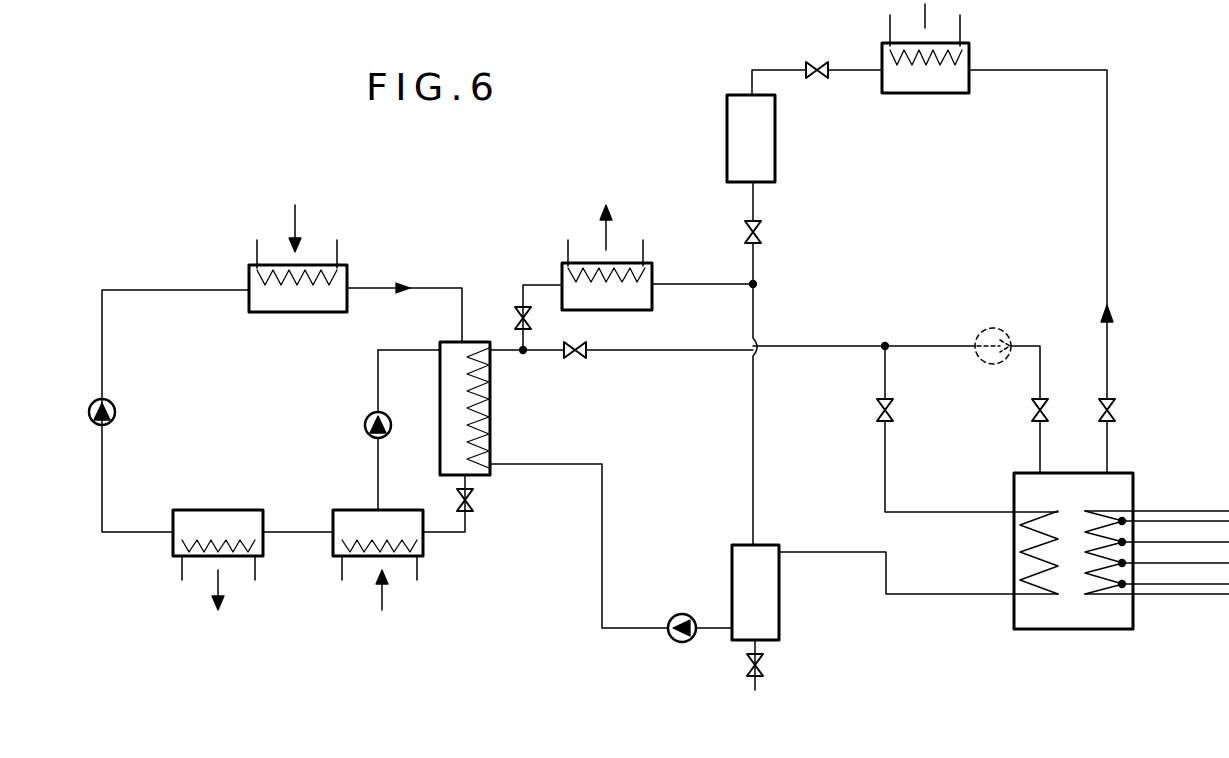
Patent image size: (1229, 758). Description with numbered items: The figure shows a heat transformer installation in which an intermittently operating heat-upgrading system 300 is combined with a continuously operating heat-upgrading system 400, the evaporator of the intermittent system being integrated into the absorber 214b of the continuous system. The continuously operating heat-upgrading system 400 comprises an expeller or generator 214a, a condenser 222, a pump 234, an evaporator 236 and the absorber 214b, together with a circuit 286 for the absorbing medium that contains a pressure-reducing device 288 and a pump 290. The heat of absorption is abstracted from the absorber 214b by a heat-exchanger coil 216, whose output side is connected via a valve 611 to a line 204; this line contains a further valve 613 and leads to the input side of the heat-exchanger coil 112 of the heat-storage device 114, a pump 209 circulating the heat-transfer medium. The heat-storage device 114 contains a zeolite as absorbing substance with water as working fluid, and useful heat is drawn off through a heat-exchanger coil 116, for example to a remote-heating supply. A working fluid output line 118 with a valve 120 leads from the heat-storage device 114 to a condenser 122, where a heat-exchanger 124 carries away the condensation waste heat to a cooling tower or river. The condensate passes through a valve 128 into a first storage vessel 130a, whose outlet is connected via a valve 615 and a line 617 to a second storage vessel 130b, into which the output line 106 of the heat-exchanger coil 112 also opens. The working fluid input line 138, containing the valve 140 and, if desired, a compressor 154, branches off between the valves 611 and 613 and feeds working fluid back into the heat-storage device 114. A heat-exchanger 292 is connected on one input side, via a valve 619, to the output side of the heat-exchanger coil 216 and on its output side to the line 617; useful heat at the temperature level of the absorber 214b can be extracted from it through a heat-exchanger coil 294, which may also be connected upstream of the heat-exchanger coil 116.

The output line 106 is at (948, 594).
The heat-exchanger coil 112 is at (1042, 596).
The heat-storage device 114 is at (1121, 559).
The heat-exchanger coil 116 is at (1108, 596).
The working fluid output line 118 is at (1108, 212).
The valve 120 is at (1115, 412).
The condenser 122 is at (932, 77).
The heat-exchanger 124 is at (940, 62).
The valve 128 is at (820, 64).
The first storage vessel 130a is at (724, 118).
The second storage vessel 130b is at (779, 600).
The working fluid input line 138 is at (933, 346).
The valve 140 is at (1033, 410).
The compressor 154 is at (995, 326).
The line 204 is at (830, 346).
The pump 209 is at (682, 643).
The expeller or generator 214a is at (350, 515).
The absorber 214b is at (596, 485).
The heat-exchanger coil 216 is at (480, 370).
The condenser 222 is at (222, 518).
The pump 234 is at (115, 412).
The evaporator 236 is at (249, 300).
The circuit 286 is at (428, 391).
The pressure-reducing device 288 is at (472, 500).
The pump 290 is at (365, 422).
The heat-exchanger 292 is at (657, 267).
The heat-exchanger coil 294 is at (625, 280).
The intermittently operating heat-upgrading system 300 is at (954, 228).
The continuously operating heat-upgrading system 400 is at (289, 405).
The valve 611 is at (585, 356).
The valve 613 is at (878, 410).
The valve 615 is at (761, 232).
The line 617 is at (755, 462).
The valve 619 is at (516, 318).